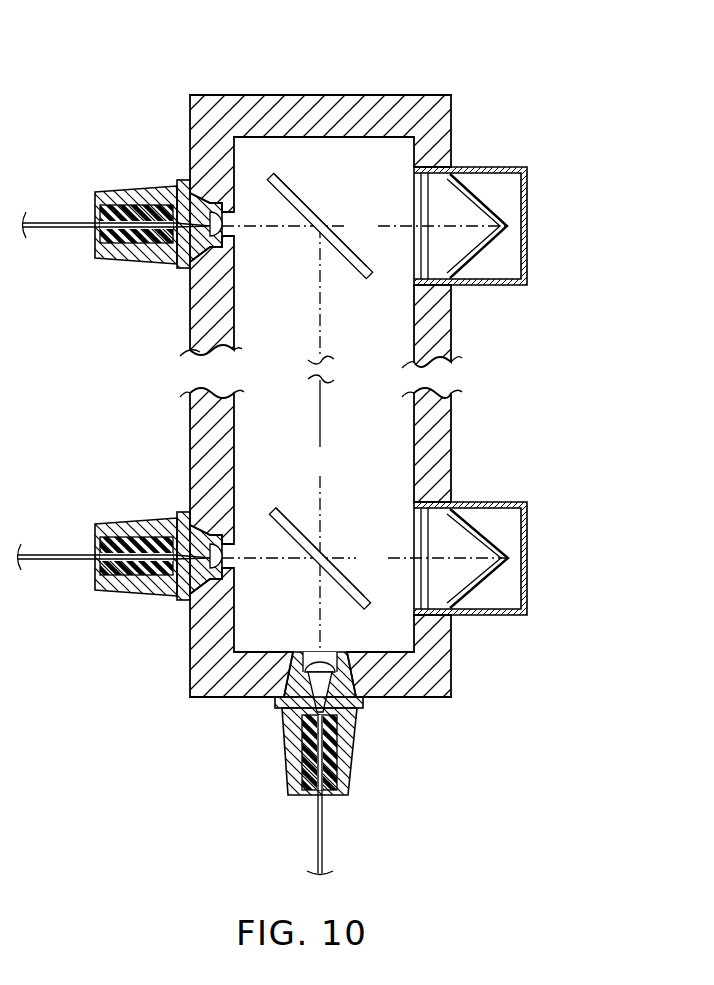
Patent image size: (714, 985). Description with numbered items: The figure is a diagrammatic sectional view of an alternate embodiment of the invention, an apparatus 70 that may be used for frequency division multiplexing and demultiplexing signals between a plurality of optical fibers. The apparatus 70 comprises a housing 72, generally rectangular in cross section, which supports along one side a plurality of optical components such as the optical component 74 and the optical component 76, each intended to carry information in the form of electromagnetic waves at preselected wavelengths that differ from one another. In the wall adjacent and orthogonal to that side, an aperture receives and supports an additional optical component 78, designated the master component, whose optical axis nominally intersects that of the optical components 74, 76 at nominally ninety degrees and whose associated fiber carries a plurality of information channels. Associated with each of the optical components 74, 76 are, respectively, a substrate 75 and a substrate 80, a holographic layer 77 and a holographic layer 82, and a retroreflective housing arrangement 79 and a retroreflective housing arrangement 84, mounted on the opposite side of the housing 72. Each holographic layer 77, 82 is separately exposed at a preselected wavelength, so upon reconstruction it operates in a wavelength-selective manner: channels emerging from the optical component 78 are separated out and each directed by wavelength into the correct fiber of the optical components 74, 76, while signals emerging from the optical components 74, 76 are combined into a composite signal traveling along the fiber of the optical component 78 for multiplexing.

The apparatus 70 is at (295, 445).
The housing 72 is at (420, 93).
The optical component 74 is at (133, 186).
The substrate 75 is at (348, 280).
The optical component 76 is at (143, 520).
The holographic layer 77 is at (362, 258).
The optical component 78 is at (358, 728).
The retroreflective housing arrangement 79 is at (527, 223).
The substrate 80 is at (352, 603).
The holographic layer 82 is at (364, 597).
The retroreflective housing arrangement 84 is at (525, 540).